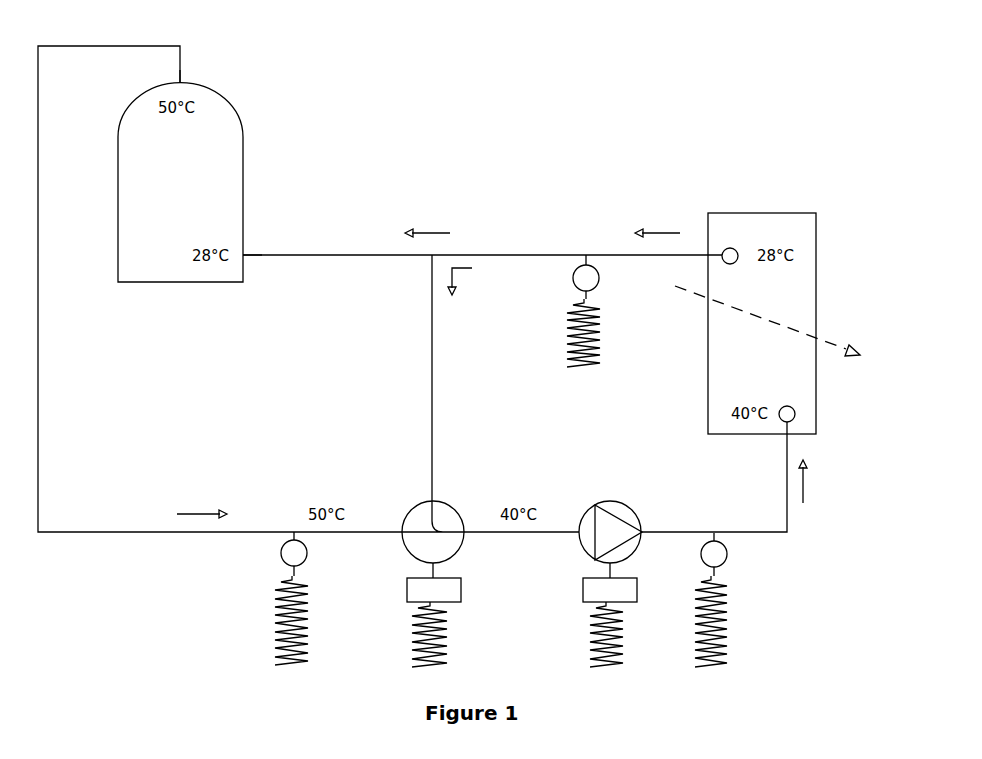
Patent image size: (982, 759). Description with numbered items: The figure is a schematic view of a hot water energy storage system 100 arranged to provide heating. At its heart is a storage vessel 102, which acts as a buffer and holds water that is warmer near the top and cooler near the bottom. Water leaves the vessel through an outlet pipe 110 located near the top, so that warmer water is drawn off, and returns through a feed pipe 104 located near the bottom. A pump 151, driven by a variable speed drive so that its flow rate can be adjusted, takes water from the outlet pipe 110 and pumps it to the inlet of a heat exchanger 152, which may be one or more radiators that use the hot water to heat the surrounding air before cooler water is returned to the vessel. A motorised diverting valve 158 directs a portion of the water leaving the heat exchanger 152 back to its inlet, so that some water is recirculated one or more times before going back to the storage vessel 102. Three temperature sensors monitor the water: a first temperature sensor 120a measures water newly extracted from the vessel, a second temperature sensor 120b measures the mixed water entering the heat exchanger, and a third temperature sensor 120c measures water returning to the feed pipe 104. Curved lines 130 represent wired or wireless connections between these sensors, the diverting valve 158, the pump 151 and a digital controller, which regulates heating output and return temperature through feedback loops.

The hot water energy storage system 100 is at (673, 120).
The storage vessel 102 is at (238, 142).
The outlet pipe 110 is at (178, 83).
The feed pipe 104 is at (243, 254).
The first temperature sensor 120a is at (280, 551).
The second temperature sensor 120b is at (725, 558).
The third temperature sensor 120c is at (573, 276).
The connections 130 is at (565, 365).
The pump 151 is at (603, 503).
The heat exchanger 152 is at (802, 398).
The diverting valve 158 is at (407, 510).